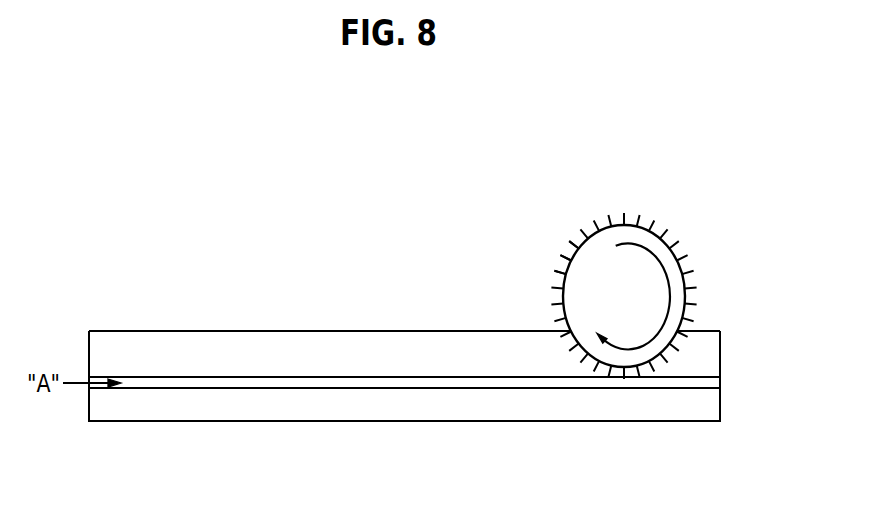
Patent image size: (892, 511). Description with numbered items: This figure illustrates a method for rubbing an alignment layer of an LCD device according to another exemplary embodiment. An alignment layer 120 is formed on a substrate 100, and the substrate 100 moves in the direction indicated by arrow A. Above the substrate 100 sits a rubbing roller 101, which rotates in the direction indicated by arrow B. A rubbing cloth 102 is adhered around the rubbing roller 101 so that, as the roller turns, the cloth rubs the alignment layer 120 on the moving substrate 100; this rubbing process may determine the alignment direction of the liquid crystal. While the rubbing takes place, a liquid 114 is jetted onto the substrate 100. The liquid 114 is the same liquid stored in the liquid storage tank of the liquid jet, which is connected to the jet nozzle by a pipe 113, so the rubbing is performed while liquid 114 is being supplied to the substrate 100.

The substrate 100 is at (713, 407).
The alignment layer 120 is at (713, 377).
The pipe 113 is at (332, 345).
The rubbing roller 101 is at (684, 290).
The rubbing cloth 102 is at (632, 223).
The liquid 114 is at (543, 268).